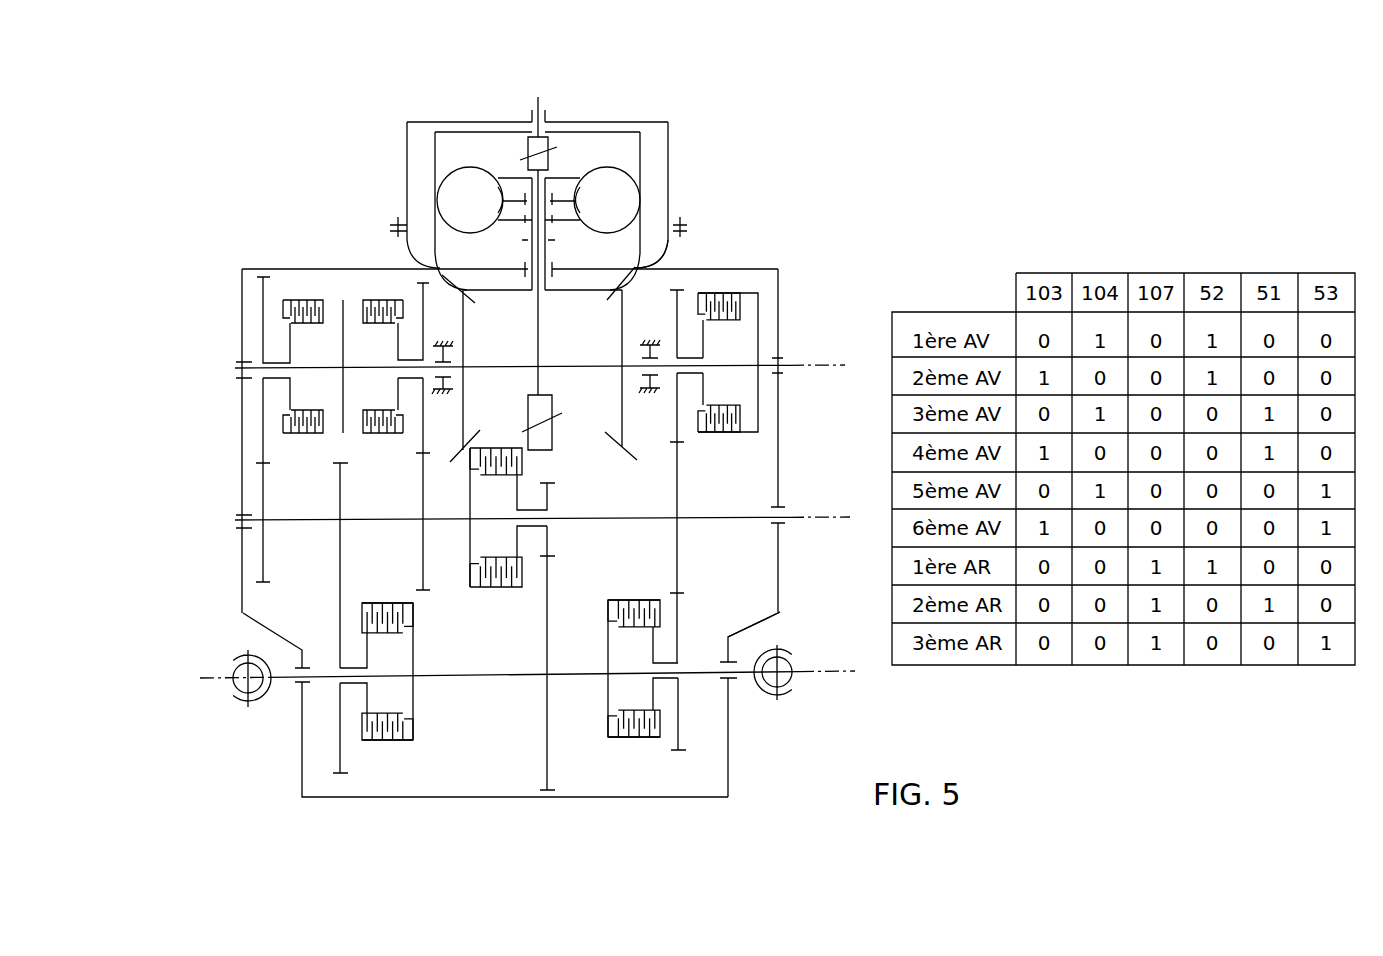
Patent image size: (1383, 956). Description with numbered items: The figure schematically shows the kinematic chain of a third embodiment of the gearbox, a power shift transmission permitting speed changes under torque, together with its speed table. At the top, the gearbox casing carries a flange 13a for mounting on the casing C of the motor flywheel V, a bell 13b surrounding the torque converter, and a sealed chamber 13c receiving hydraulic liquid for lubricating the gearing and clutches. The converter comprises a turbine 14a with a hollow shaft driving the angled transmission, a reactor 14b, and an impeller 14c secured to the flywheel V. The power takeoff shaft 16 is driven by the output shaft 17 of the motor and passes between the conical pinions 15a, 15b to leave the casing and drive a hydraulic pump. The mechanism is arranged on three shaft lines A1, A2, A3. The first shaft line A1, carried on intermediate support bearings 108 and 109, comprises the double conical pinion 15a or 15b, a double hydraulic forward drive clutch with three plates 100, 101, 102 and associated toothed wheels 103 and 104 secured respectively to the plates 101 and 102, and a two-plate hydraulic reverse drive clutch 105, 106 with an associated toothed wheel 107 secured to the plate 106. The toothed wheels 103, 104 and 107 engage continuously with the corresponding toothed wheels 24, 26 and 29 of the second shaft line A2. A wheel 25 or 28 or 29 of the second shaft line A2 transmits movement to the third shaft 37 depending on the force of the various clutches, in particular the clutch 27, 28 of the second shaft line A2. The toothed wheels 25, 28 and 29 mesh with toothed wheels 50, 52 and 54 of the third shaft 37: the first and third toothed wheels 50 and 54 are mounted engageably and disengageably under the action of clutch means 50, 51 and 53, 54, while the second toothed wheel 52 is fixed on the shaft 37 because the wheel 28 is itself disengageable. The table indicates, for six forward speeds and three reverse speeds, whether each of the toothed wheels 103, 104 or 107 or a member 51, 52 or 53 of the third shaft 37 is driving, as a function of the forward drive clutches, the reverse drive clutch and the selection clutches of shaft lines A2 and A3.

The casing of the flywheel C is at (407, 153).
The flywheel V is at (435, 143).
The power takeoff shaft 16 is at (537, 327).
The output shaft of the motor 17 is at (531, 110).
The turbine 14a is at (593, 170).
The reactor 14b is at (572, 200).
The impeller 14c is at (622, 250).
The flange 13a is at (690, 243).
The bell 13b is at (655, 290).
The sealed chamber 13c is at (779, 290).
The double conical pinion 15a is at (426, 310).
The double conical pinion 15b is at (623, 297).
The toothed wheel 104 is at (448, 354).
The intermediate support bearing 108 is at (458, 364).
The clutch plate 101 is at (290, 337).
The toothed wheel 103 is at (265, 347).
The clutch plate 100 is at (343, 381).
The clutch plate 102 is at (397, 398).
The clutch plate 105 is at (760, 315).
The clutch plate 106 is at (633, 284).
The toothed wheel 107 is at (680, 432).
The intermediate support bearing 109 is at (652, 378).
The toothed wheel 24 is at (263, 484).
The toothed wheel 25 is at (338, 512).
The toothed wheel 26 is at (423, 547).
The clutch 27 is at (470, 547).
The toothed wheel 28 is at (677, 518).
The toothed wheel 29 is at (677, 567).
The first shaft line A1 is at (798, 362).
The second shaft line A2 is at (800, 514).
The third shaft line A3 is at (803, 670).
The first toothed wheel 50 is at (340, 642).
The clutch member 51 is at (413, 683).
The second toothed wheel 52 is at (547, 680).
The clutch member 53 is at (608, 687).
The third toothed wheel 54 is at (680, 643).
The third shaft 37 is at (740, 672).